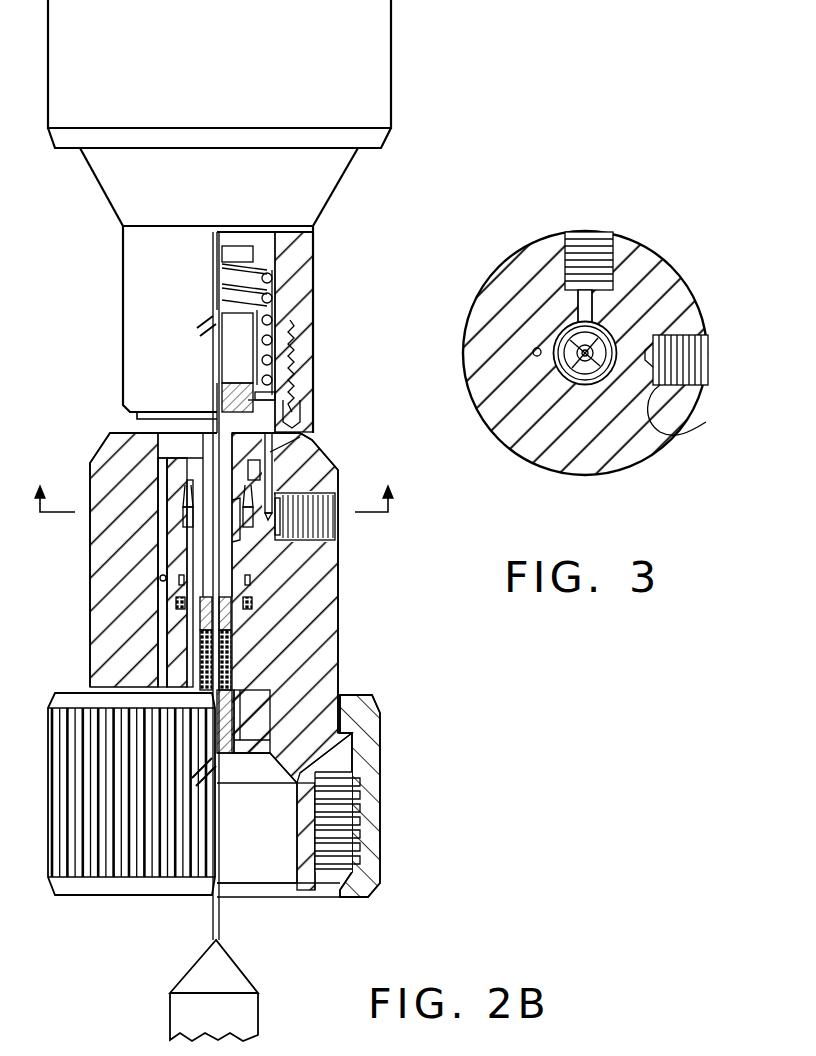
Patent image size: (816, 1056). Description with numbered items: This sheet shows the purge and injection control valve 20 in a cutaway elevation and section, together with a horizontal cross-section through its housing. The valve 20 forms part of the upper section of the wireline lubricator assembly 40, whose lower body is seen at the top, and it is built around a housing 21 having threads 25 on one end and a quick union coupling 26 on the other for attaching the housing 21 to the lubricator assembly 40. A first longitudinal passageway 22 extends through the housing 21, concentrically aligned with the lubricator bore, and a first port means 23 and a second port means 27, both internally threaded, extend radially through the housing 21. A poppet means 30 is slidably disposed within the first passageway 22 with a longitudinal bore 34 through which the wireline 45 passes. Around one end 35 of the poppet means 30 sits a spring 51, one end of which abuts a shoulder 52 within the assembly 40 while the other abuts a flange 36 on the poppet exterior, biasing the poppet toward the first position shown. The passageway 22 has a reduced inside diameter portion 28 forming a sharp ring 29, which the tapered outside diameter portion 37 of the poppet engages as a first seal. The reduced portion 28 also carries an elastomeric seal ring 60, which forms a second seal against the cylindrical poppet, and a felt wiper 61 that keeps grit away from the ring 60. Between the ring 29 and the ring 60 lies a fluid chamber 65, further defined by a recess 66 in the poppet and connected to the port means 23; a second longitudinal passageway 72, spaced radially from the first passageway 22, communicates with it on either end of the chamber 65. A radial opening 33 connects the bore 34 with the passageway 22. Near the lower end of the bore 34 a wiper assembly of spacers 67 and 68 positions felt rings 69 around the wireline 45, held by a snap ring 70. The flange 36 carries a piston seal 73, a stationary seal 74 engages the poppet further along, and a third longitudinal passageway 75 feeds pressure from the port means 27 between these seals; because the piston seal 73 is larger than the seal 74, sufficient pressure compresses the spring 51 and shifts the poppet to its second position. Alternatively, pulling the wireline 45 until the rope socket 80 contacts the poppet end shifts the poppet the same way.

In FIG. 2B, the valve 20 is at (78, 440).
In FIG. 2B, the housing 21 is at (332, 662).
In FIG. 3, the housing 21 is at (650, 258).
In FIG. 2B, the first longitudinal passageway 22 is at (305, 327).
In FIG. 3, the first port means 23 is at (580, 238).
In FIG. 2B, the threads 25 is at (292, 358).
In FIG. 2B, the quick union coupling 26 is at (372, 742).
In FIG. 2B, the second port means 27 is at (335, 532).
In FIG. 3, the second port means 27 is at (700, 366).
In FIG. 2B, the reduced inside diameter portion 28 is at (190, 548).
In FIG. 2B, the ring 29 is at (188, 470).
In FIG. 2B, the poppet means 30 is at (165, 652).
In FIG. 3, the poppet means 30 is at (582, 365).
In FIG. 2B, the opening 33 is at (285, 450).
In FIG. 2B, the longitudinal bore 34 is at (150, 434).
In FIG. 2B, the end 35 is at (240, 340).
In FIG. 2B, the flange 36 is at (222, 392).
In FIG. 2B, the tapered outside diameter portion 37 is at (278, 498).
In FIG. 2B, the lubricator assembly 40 is at (406, 82).
In FIG. 2B, the wireline 45 is at (212, 920).
In FIG. 3, the wireline 45 is at (590, 360).
In FIG. 2B, the spring 51 is at (275, 296).
In FIG. 2B, the shoulder 52 is at (224, 272).
In FIG. 2B, the elastomeric seal ring 60 is at (252, 580).
In FIG. 2B, the felt wiper 61 is at (254, 600).
In FIG. 2B, the fluid chamber 65 is at (186, 514).
In FIG. 2B, the recess 66 is at (242, 525).
In FIG. 2B, the spacer 67 is at (236, 695).
In FIG. 2B, the spacer 68 is at (235, 612).
In FIG. 2B, the felt rings 69 is at (212, 618).
In FIG. 2B, the snap ring 70 is at (242, 737).
In FIG. 2B, the second longitudinal passageway 72 is at (160, 578).
In FIG. 3, the second longitudinal passageway 72 is at (533, 352).
In FIG. 2B, the piston seal 73 is at (262, 397).
In FIG. 2B, the stationary seal 74 is at (296, 416).
In FIG. 2B, the third longitudinal passageway 75 is at (272, 458).
In FIG. 3, the third longitudinal passageway 75 is at (672, 434).
In FIG. 2B, the rope socket 80 is at (224, 972).